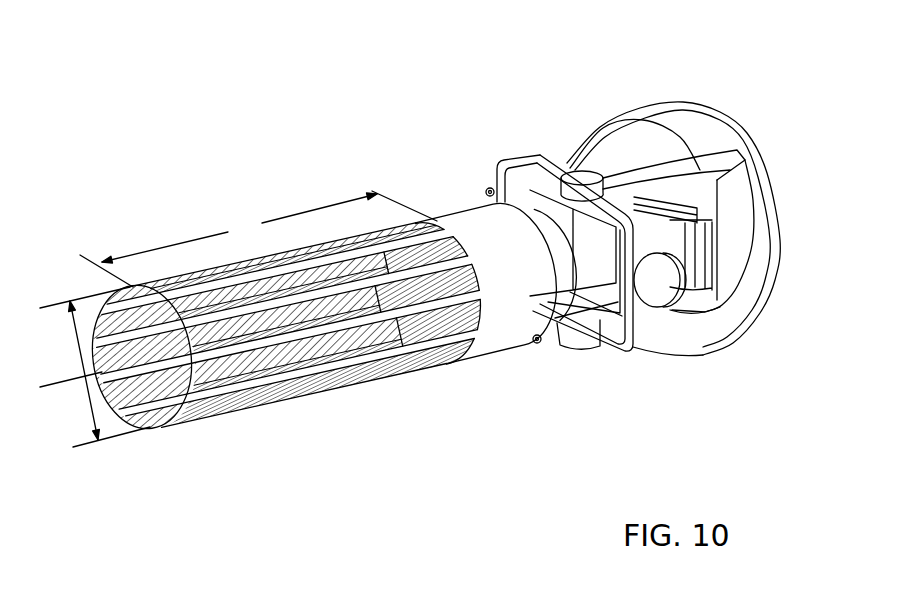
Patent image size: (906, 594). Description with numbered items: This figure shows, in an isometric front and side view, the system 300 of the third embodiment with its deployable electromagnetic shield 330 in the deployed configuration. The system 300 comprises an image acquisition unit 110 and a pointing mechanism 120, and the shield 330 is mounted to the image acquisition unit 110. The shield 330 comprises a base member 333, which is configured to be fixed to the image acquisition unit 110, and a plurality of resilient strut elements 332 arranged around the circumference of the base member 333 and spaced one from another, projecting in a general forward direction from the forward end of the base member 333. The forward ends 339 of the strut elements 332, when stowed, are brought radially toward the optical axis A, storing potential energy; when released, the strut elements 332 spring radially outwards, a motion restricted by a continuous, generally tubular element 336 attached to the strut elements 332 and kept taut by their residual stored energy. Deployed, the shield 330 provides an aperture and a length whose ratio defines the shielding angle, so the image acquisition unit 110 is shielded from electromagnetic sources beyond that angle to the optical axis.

The system 300 is at (413, 270).
The deployable electromagnetic shield 330 is at (480, 340).
The resilient strut elements 332 is at (312, 378).
The base member 333 is at (458, 218).
The tubular element 336 is at (127, 407).
The forward ends 339 is at (168, 425).
The image acquisition unit 110 is at (712, 328).
The pointing mechanism 120 is at (722, 328).